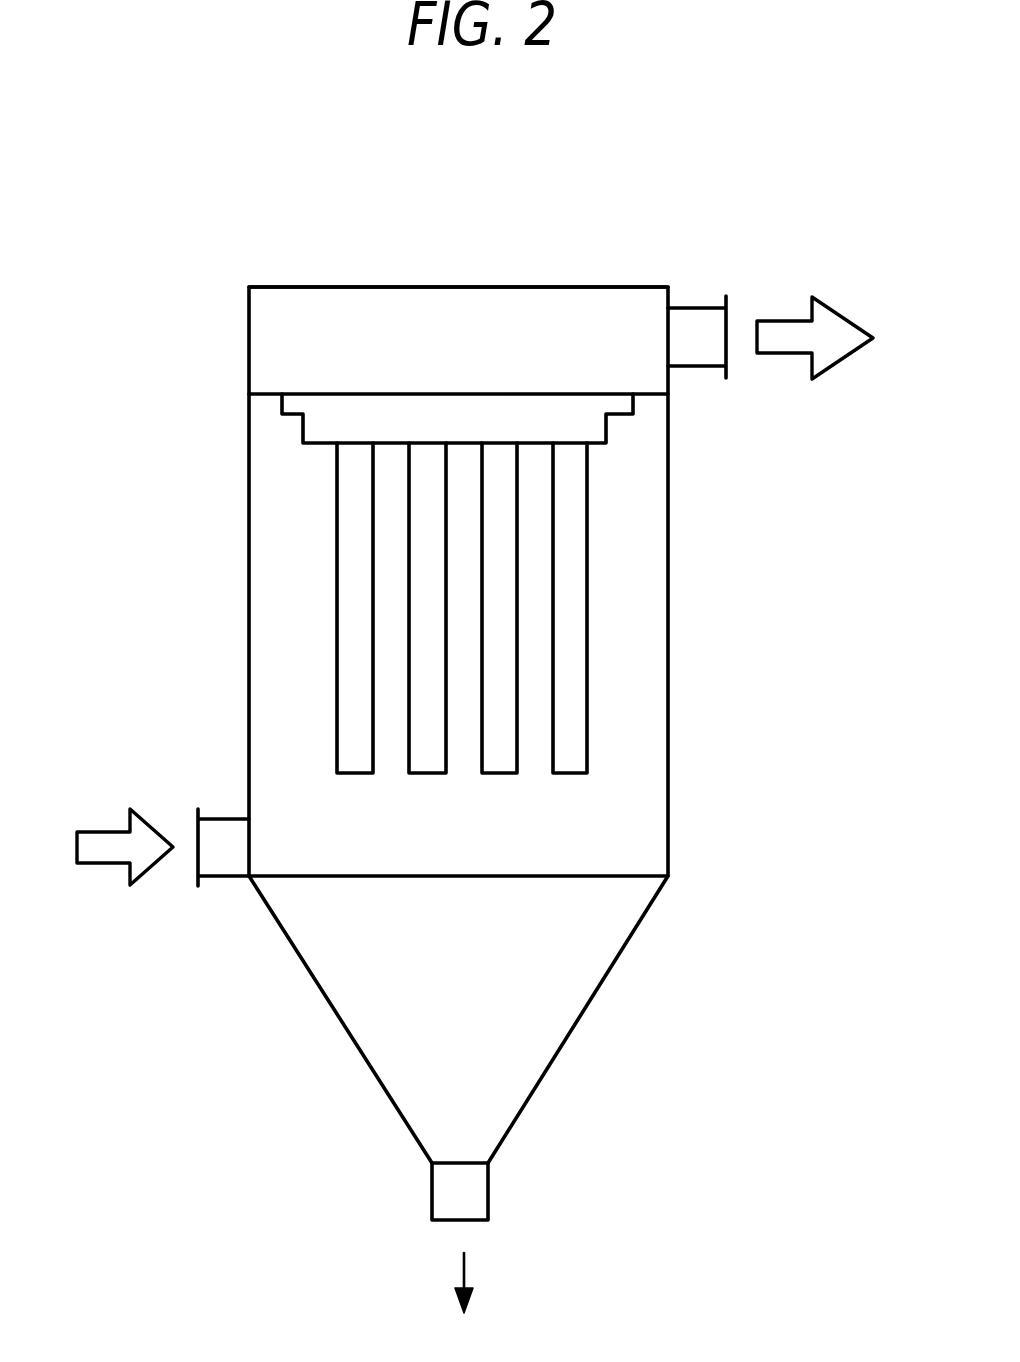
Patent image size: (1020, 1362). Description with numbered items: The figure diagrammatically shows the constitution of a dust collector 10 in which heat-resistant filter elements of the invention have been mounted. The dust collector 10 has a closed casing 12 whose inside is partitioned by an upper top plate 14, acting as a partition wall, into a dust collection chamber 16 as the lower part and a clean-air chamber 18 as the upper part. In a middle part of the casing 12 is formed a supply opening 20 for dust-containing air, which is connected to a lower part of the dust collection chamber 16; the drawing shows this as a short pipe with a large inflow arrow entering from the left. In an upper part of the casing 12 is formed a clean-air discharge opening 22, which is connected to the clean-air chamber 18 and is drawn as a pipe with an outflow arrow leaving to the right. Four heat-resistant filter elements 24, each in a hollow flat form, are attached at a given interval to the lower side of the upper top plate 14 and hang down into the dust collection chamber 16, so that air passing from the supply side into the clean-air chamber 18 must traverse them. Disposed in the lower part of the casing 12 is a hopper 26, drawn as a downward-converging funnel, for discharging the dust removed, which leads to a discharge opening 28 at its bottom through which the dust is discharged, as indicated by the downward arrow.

The dust collector 10 is at (475, 712).
The casing 12 is at (669, 612).
The upper top plate 14 is at (266, 394).
The dust collection chamber 16 is at (650, 825).
The clean-air chamber 18 is at (409, 304).
The supply opening 20 is at (225, 831).
The clean-air discharge opening 22 is at (700, 354).
The heat-resistant filter elements 24 is at (607, 783).
The hopper 26 is at (563, 1006).
The discharge opening 28 is at (478, 1190).